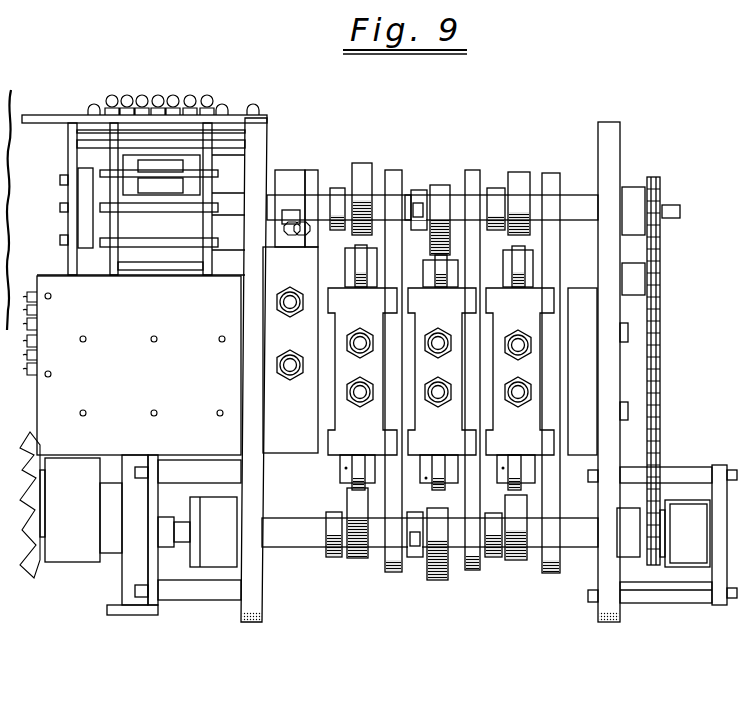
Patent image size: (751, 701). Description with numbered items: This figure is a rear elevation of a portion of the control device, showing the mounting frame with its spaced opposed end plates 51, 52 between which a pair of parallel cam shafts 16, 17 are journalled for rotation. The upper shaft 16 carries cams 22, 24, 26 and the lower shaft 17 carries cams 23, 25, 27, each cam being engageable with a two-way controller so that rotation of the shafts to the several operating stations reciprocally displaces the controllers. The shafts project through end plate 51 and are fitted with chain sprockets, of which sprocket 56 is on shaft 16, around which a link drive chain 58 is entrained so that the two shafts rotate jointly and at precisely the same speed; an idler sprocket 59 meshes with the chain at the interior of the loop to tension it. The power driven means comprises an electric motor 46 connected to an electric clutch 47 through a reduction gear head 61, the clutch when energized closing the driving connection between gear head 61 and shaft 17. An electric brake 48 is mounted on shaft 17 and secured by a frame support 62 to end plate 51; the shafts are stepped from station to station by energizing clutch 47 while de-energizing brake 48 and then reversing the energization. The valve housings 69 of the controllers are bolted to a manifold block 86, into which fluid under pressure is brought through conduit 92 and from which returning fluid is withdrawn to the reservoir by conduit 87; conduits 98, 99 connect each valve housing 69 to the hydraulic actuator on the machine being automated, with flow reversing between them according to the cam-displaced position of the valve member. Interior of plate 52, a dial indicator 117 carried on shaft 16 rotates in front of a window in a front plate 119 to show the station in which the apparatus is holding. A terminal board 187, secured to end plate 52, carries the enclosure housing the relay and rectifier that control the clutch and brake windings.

The cam shaft 16 is at (580, 206).
The cam shaft 17 is at (290, 542).
The cam 22 is at (520, 176).
The cam 23 is at (517, 562).
The cam 24 is at (442, 191).
The cam 25 is at (440, 582).
The cam 26 is at (362, 176).
The cam 27 is at (360, 560).
The electric motor 46 is at (86, 513).
The clutch 47 is at (222, 533).
The brake 48 is at (699, 542).
The end plate 51 is at (600, 606).
The end plate 52 is at (266, 152).
The chain sprocket 56 is at (635, 196).
The link drive chain 58 is at (660, 364).
The idler sprocket 59 is at (645, 272).
The reduction gear head 61 is at (146, 533).
The frame support 62 is at (719, 464).
The valve housing 69 is at (343, 457).
The manifold block 86 is at (292, 455).
The conduit 87 is at (292, 379).
The conduit 92 is at (287, 290).
The conduit 98 is at (353, 330).
The conduit 99 is at (362, 406).
The dial indicator 117 is at (291, 196).
The front plate 119 is at (312, 183).
The terminal board 187 is at (148, 378).